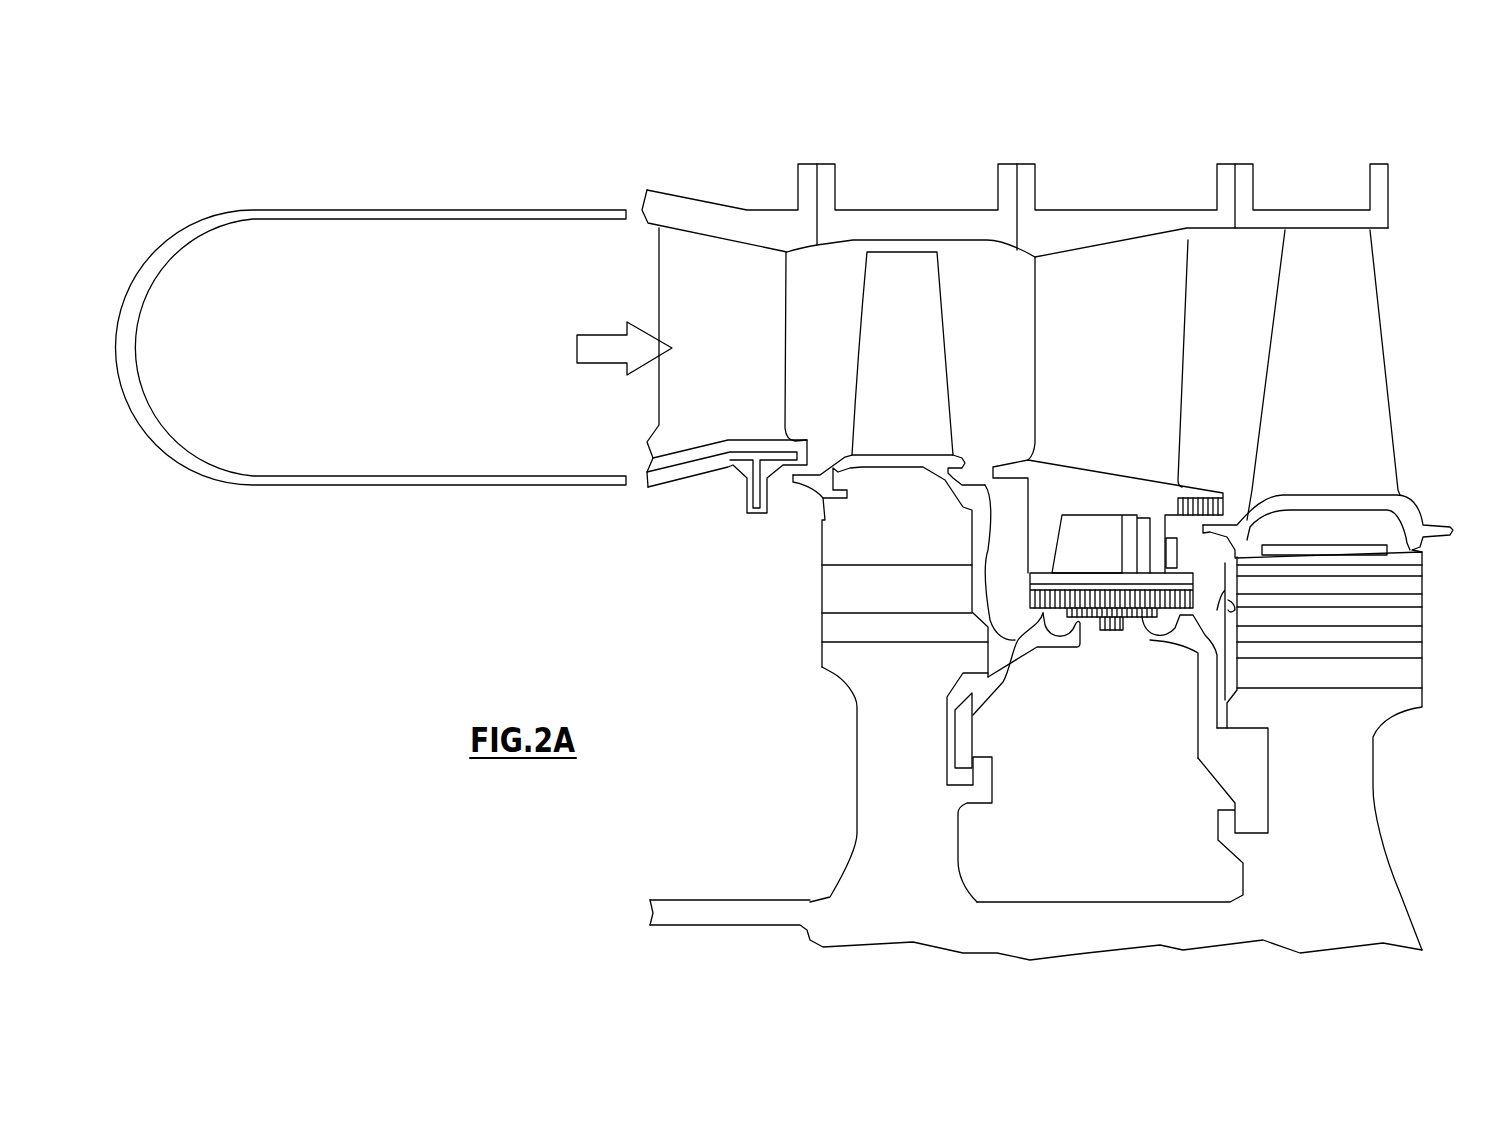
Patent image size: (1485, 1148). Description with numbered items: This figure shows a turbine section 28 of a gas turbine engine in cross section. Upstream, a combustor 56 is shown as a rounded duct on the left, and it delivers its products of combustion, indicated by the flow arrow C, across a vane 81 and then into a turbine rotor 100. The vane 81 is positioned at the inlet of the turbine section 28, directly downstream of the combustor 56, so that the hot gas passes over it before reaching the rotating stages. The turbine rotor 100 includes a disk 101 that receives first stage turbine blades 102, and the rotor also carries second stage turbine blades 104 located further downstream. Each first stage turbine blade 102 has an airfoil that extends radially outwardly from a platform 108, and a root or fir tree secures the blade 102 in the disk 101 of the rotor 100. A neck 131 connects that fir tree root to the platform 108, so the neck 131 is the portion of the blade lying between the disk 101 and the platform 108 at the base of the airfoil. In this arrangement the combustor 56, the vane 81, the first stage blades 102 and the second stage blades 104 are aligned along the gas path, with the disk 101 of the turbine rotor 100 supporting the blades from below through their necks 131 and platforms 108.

The turbine section 28 is at (733, 101).
The combustor 56 is at (374, 361).
The core airflow C is at (605, 363).
The vane 81 is at (693, 430).
The turbine rotor 100 is at (760, 776).
The disk 101 is at (937, 837).
The first stage turbine blades 102 is at (893, 272).
The second stage turbine blades 104 is at (1372, 343).
The platform 108 is at (935, 457).
The neck 131 is at (853, 535).